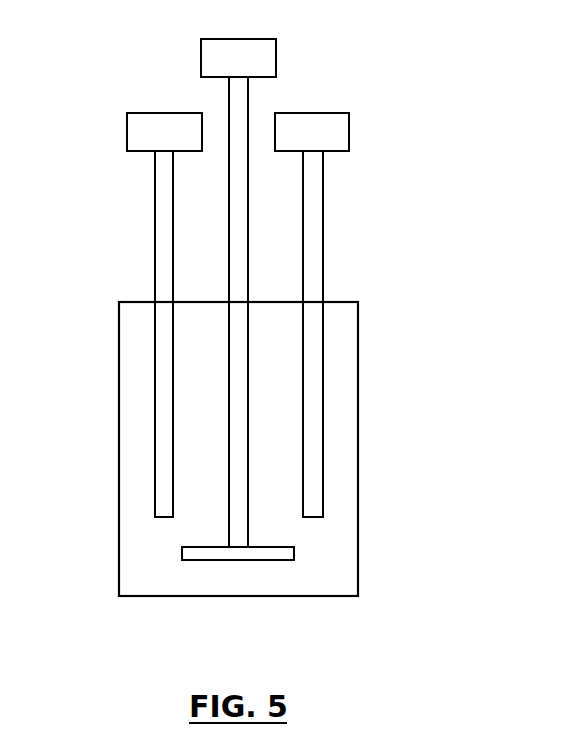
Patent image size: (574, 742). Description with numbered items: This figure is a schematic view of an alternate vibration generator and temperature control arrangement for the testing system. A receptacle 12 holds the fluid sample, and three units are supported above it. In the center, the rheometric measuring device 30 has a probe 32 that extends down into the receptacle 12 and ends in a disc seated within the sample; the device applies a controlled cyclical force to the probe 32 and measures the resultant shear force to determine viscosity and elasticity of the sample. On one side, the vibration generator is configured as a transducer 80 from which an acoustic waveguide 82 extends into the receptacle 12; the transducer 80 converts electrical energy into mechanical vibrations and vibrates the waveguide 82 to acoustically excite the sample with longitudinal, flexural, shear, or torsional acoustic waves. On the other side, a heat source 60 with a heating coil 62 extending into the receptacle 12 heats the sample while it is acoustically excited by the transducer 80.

The receptacle 12 is at (119, 420).
The rheometric measuring device 30 is at (276, 55).
The probe 32 is at (248, 96).
The heat source 60 is at (127, 121).
The heating coil 62 is at (155, 272).
The transducer 80 is at (349, 129).
The acoustic waveguide 82 is at (323, 269).